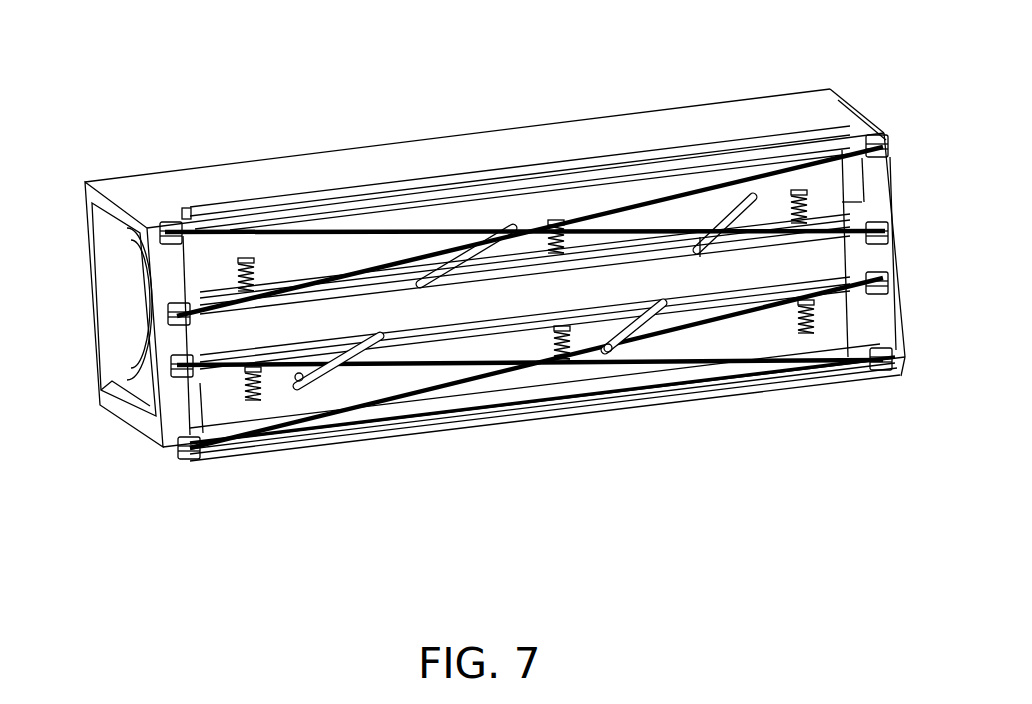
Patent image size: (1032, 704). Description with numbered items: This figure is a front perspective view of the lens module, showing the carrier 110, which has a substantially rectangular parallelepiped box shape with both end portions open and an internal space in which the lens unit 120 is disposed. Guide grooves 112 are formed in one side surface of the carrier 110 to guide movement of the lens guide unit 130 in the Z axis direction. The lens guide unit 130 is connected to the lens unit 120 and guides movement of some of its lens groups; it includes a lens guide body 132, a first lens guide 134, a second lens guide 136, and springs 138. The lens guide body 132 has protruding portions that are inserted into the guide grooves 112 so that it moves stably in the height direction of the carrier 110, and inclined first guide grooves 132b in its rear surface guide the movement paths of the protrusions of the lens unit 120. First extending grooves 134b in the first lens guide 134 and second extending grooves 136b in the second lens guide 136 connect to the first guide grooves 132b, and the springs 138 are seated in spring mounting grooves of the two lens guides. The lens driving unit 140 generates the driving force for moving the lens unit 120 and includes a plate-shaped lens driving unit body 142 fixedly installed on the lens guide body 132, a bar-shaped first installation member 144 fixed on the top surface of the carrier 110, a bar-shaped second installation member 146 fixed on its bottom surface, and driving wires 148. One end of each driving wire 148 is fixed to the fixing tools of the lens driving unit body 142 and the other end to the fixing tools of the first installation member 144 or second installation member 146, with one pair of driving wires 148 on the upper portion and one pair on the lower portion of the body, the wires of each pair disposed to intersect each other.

The carrier 110 is at (281, 175).
The guide grooves 112 is at (190, 213).
The lens unit 120 is at (140, 372).
The lens guide unit 130 is at (824, 2).
The lens guide body 132 is at (852, 213).
The first guide grooves 132b is at (489, 242).
The first lens guide 134 is at (680, 213).
The first extending grooves 134b is at (517, 234).
The second lens guide 136 is at (597, 333).
The second extending grooves 136b is at (295, 375).
The springs 138 is at (250, 286).
The lens driving unit 140 is at (503, 554).
The lens driving unit body 142 is at (243, 330).
The first installation member 144 is at (192, 214).
The second installation member 146 is at (387, 437).
The driving wires 148 is at (478, 368).